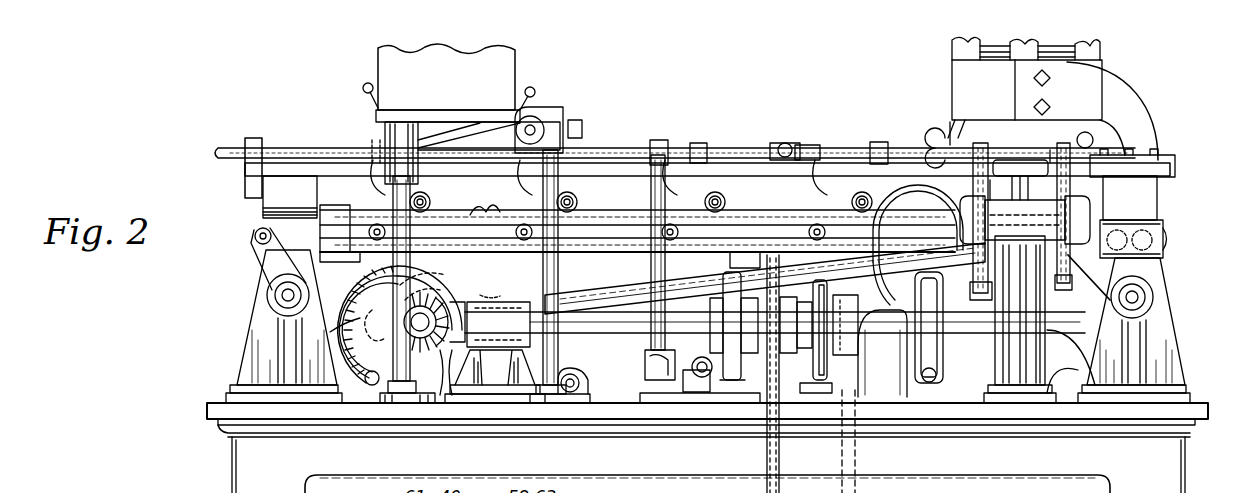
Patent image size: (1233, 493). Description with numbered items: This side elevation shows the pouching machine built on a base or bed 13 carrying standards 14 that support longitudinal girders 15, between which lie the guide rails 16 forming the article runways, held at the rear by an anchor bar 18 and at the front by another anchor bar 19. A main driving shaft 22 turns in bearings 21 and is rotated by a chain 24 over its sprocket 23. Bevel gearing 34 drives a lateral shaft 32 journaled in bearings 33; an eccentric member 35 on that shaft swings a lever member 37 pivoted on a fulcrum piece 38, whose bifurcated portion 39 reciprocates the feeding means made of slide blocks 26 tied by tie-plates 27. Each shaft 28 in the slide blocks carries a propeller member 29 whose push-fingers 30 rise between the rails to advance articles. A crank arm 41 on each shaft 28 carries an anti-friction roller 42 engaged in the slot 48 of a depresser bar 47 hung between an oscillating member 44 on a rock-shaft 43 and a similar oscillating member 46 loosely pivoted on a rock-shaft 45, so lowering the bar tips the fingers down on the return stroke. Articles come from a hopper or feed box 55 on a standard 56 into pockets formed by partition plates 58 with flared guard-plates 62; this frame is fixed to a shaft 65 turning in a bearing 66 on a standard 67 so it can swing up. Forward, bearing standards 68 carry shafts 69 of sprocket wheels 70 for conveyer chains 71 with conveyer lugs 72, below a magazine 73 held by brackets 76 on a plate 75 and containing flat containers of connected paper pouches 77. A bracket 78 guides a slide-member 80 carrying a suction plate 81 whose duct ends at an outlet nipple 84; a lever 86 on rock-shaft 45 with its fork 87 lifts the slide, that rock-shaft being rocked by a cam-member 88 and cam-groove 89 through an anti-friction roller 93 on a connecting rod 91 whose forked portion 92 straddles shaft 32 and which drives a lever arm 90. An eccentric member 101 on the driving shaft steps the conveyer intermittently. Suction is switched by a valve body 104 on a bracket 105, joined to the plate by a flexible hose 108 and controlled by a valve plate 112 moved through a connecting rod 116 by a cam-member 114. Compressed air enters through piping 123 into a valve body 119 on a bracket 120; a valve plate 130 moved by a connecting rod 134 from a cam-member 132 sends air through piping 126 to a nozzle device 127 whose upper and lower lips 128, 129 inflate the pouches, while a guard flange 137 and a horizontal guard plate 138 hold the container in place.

The base or bed 13 is at (575, 405).
The standards 14 is at (268, 206).
The longitudinal bars or girders 15 is at (348, 167).
The guide rails 16 is at (290, 148).
The anchor bar 18 is at (253, 138).
The anchor bar 19 is at (880, 148).
The bearings 21 is at (500, 310).
The main driving shaft 22 is at (615, 335).
The sprocket 23 is at (785, 353).
The chain 24 is at (772, 445).
The slide blocks 26 is at (345, 215).
The tie-plates 27 is at (345, 256).
The shaft 28 is at (432, 205).
The propeller member 29 is at (378, 195).
The push-fingers 30 is at (372, 143).
The shaft 32 is at (365, 380).
The bearings 33 is at (362, 393).
The bevel gearing 34 is at (443, 393).
The eccentric member 35 is at (346, 300).
The lever member 37 is at (560, 282).
The fulcrum piece 38 is at (588, 385).
The bifurcated portion 39 is at (485, 199).
The crank arm 41 is at (430, 201).
The anti-friction roller 42 is at (369, 234).
The rock-shaft 43 is at (267, 296).
The oscillating member 44 is at (268, 272).
The rock-shaft 45 is at (1154, 297).
The oscillating member 46 is at (1165, 246).
The depresser bar 47 is at (255, 249).
The slot or guideway 48 is at (636, 264).
The hopper or feed box 55 is at (448, 83).
The standard 56 is at (398, 296).
The partition plates 58 is at (385, 125).
The guard-plate 62 is at (363, 85).
The transverse bar or shaft 65 is at (540, 128).
The bearing 66 is at (535, 115).
The supporting standard 67 is at (583, 148).
The bearing standards 68 is at (1005, 322).
The shafts 69 is at (1090, 218).
The sprocket wheels 70 is at (1024, 209).
The conveyer chains 71 is at (990, 165).
The conveyer lugs 72 is at (1060, 117).
The magazine 73 is at (1100, 50).
The plate 75 is at (1141, 161).
The brackets 76 is at (1112, 106).
The paper pouches 77 is at (1027, 73).
The bracket 78 is at (1071, 354).
The slide-member 80 is at (1028, 184).
The suction plate 81 is at (1031, 140).
The outlet nipple 84 is at (1030, 162).
The lever 86 is at (1089, 278).
The fork or bifurcated portion 87 is at (969, 292).
The cam-member 88 is at (338, 332).
The cam-groove 89 is at (450, 278).
The lever arm 90 is at (1162, 240).
The connecting rod 91 is at (645, 340).
The bifurcated or forked portion 92 is at (371, 328).
The anti-friction roller 93 is at (493, 284).
The eccentric member 101 is at (936, 380).
The valve body 104 is at (845, 318).
The supporting bracket 105 is at (880, 420).
The flexible hose member 108 is at (918, 215).
The movable valve plate 112 is at (815, 395).
The cam-member 114 is at (818, 385).
The connecting rod 116 is at (805, 390).
The valve body 119 is at (683, 378).
The supporting bracket 120 is at (683, 397).
The piping 123 is at (707, 397).
The piping 126 is at (650, 150).
The nozzle device 127 is at (936, 140).
The upper transverse lip 128 is at (960, 128).
The lower transverse lip 129 is at (968, 130).
The movable valve plate 130 is at (730, 390).
The cam-member 132 is at (746, 248).
The connecting rod 134 is at (744, 393).
The fixed stop or guard flange 137 is at (1093, 138).
The horizontal guard plate 138 is at (950, 122).